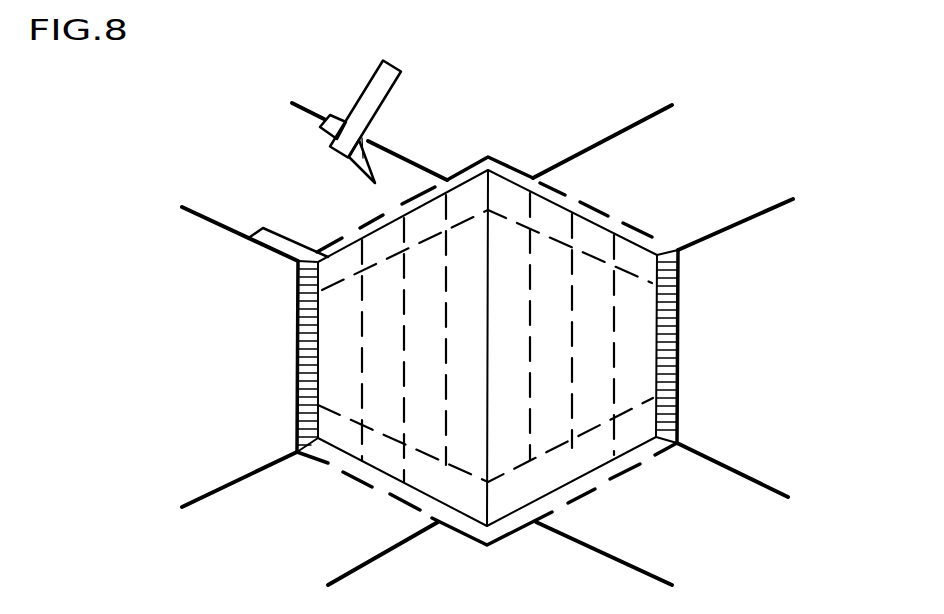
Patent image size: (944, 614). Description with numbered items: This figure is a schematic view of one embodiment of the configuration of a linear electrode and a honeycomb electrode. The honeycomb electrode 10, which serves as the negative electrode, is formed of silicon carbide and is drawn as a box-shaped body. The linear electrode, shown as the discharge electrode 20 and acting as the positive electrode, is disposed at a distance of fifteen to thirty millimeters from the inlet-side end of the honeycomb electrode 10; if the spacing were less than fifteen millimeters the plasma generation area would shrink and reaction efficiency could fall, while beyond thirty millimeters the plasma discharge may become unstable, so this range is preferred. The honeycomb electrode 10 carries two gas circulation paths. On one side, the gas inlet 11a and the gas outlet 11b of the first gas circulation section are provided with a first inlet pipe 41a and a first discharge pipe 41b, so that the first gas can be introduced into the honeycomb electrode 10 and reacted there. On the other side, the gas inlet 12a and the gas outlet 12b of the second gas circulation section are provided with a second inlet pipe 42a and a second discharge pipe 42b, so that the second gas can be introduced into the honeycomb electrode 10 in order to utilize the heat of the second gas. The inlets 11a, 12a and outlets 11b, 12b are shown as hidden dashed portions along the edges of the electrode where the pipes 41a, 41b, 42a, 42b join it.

The honeycomb electrode 10 is at (687, 339).
The discharge electrode 20 is at (380, 148).
The gas inlet 11a is at (387, 211).
The gas outlet 11b is at (594, 487).
The gas inlet 12a is at (364, 484).
The gas outlet 12b is at (598, 210).
The first inlet pipe 41a is at (215, 223).
The first discharge pipe 41b is at (755, 483).
The second inlet pipe 42a is at (235, 481).
The second discharge pipe 42b is at (622, 127).